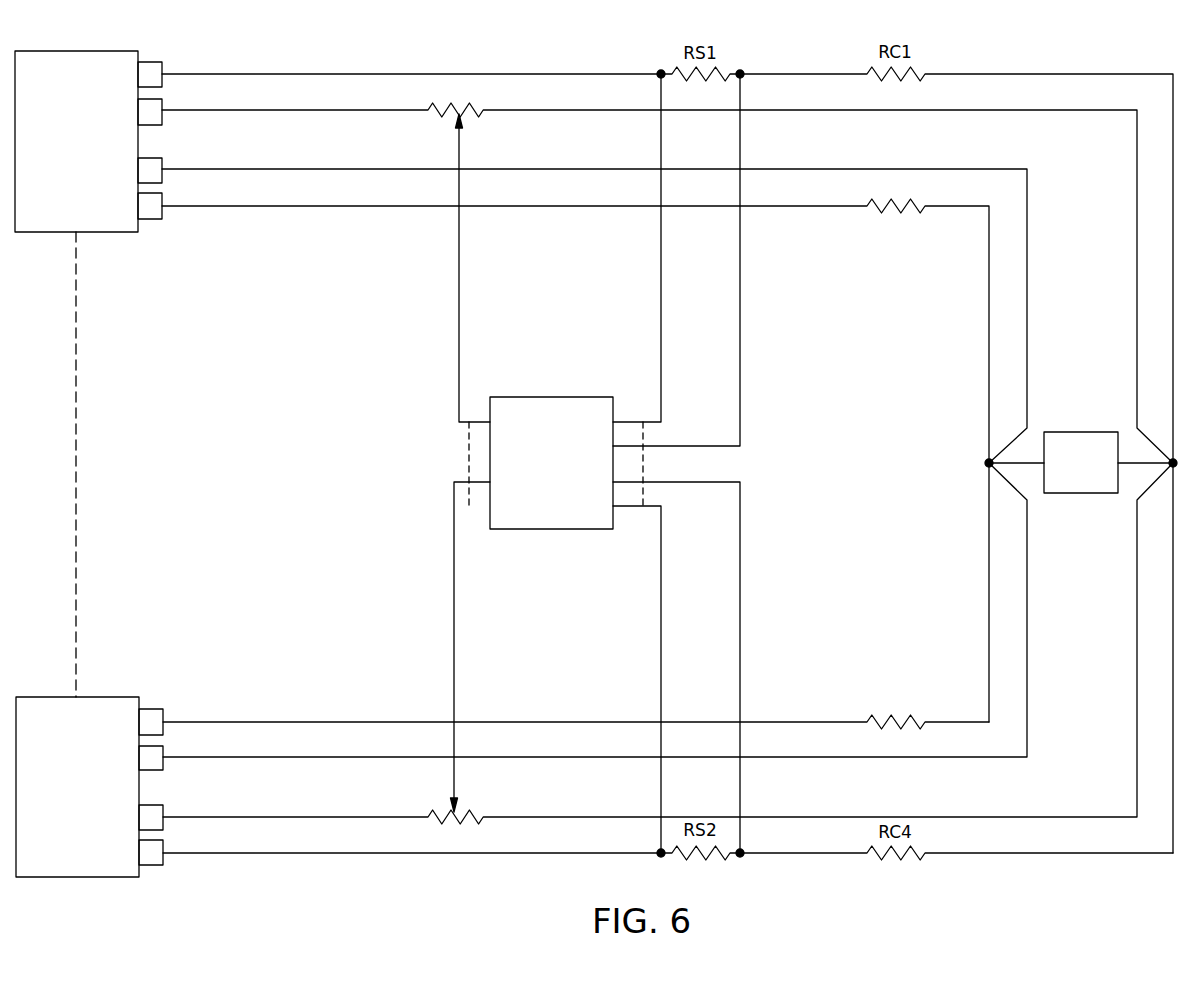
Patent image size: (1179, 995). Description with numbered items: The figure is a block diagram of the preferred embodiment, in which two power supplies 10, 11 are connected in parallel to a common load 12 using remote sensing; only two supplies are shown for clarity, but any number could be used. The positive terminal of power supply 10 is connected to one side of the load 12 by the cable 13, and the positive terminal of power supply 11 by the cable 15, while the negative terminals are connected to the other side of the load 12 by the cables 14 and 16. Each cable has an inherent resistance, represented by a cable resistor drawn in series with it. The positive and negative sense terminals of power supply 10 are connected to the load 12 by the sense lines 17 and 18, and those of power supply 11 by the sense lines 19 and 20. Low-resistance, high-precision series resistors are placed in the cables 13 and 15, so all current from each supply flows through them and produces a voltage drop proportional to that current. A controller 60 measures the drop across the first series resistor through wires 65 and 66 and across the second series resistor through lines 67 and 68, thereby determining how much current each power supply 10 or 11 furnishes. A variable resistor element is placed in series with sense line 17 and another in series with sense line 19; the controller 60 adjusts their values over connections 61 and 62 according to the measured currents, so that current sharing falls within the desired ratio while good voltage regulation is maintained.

The power supply 10 is at (118, 232).
The power supply 11 is at (110, 697).
The load 12 is at (1075, 493).
The cable 13 is at (508, 74).
The cable 14 is at (538, 206).
The cable 15 is at (538, 853).
The cable 16 is at (508, 722).
The sense line 17 is at (562, 110).
The sense line 18 is at (525, 169).
The sense line 19 is at (525, 817).
The sense line 20 is at (562, 757).
The controller 60 is at (552, 397).
The control line to variable resistor RV1 61 is at (459, 292).
The control line to variable resistor RV2 62 is at (454, 587).
The wire 65 is at (661, 292).
The wire 66 is at (740, 283).
The line 67 is at (661, 585).
The line 68 is at (740, 577).